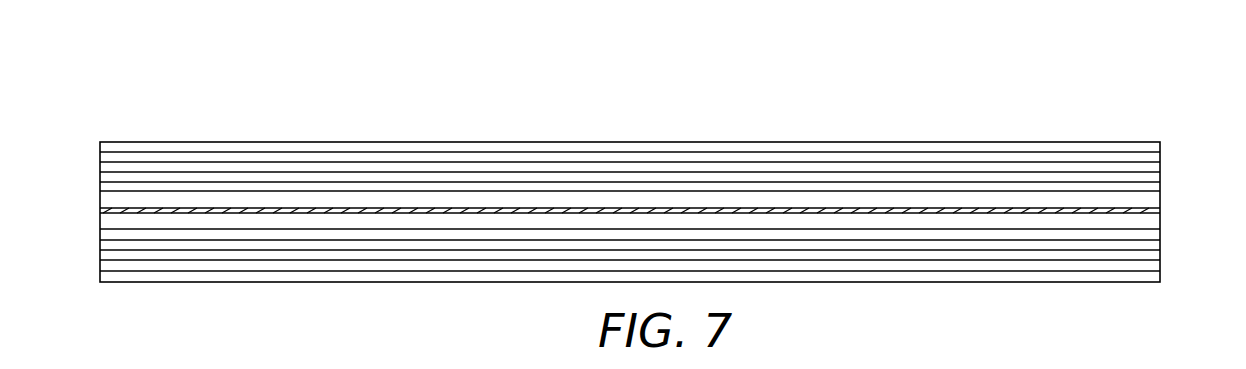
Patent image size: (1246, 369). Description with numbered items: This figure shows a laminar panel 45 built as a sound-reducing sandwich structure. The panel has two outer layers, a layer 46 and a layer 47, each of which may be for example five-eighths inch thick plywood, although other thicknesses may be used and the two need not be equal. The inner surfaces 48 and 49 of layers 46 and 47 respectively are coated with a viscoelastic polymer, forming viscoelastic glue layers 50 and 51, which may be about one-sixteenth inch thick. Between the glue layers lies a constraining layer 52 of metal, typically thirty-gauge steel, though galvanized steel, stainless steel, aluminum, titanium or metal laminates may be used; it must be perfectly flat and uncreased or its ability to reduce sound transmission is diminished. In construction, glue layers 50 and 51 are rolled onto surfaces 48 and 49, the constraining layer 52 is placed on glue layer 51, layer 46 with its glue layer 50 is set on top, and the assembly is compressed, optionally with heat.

The laminar panel 45 is at (795, 98).
The layer 46 is at (1163, 165).
The layer 47 is at (1163, 258).
The inner surface 48 is at (1157, 193).
The inner surface 49 is at (1158, 226).
The viscoelastic glue layer 50 is at (106, 198).
The viscoelastic glue layer 51 is at (106, 223).
The constraining layer 52 is at (107, 211).